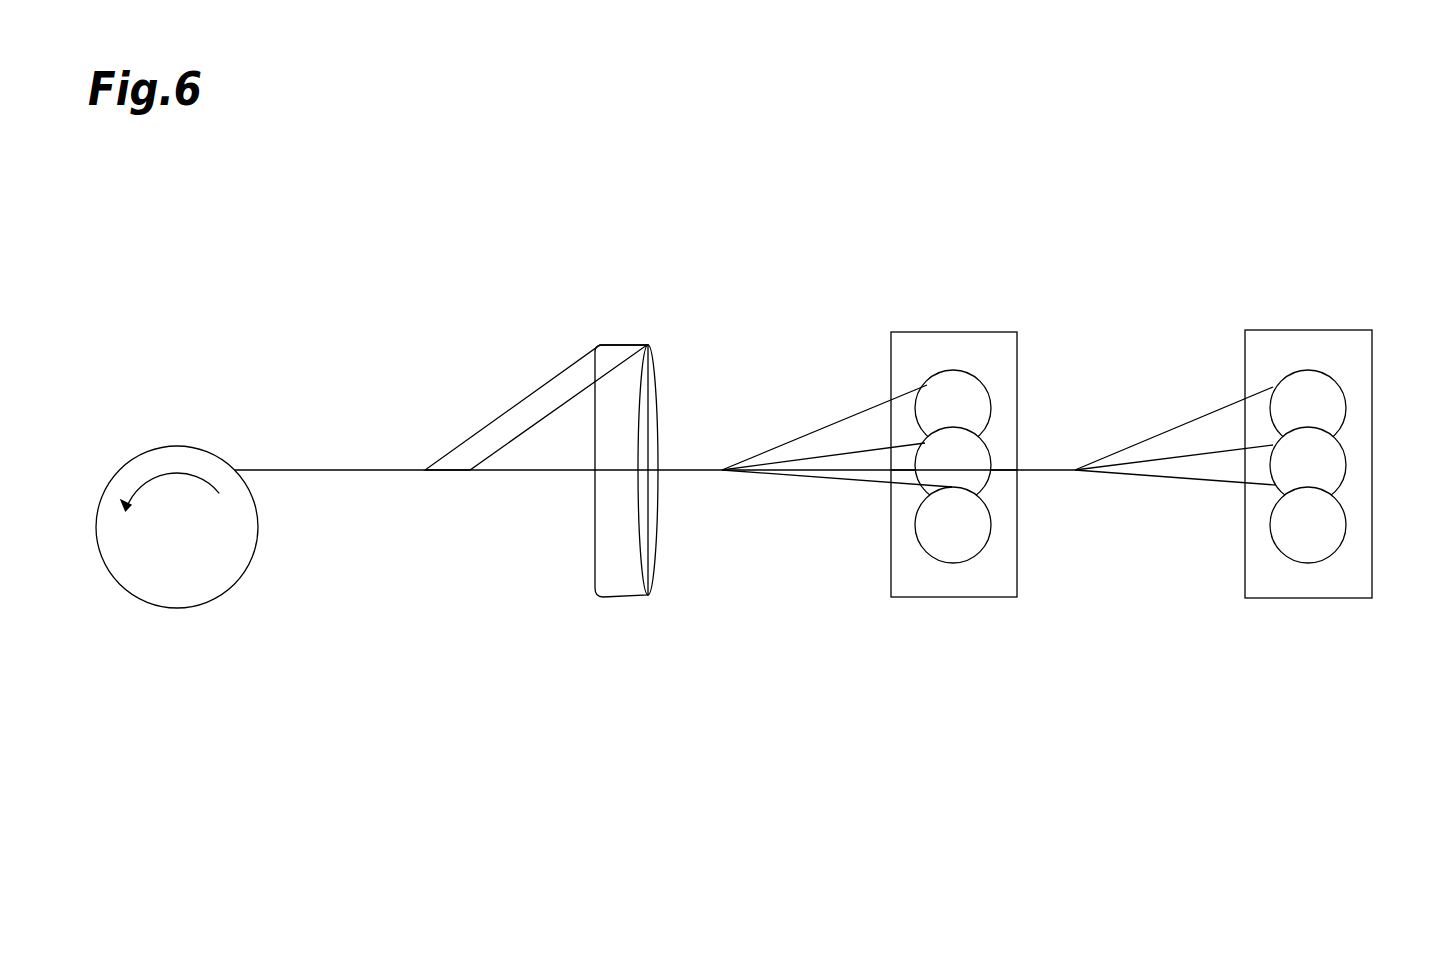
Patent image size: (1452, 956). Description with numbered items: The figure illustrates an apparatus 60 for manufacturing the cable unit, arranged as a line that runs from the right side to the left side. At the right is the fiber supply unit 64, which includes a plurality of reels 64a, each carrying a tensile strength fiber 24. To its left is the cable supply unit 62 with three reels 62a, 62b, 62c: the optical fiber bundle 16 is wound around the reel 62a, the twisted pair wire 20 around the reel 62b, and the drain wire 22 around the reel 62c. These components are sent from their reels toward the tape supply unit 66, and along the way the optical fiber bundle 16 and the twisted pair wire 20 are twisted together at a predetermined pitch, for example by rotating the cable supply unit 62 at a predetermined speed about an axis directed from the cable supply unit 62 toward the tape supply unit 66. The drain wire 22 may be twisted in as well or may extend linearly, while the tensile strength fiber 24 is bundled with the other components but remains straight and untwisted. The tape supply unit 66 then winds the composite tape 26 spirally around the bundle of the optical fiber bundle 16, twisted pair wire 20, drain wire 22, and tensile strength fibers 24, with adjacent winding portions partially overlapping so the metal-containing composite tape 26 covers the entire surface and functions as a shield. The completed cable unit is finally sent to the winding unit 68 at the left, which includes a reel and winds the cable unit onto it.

The apparatus 60 is at (1133, 252).
The winding unit 68 is at (177, 608).
The composite tape 26 is at (538, 402).
The tape supply unit 66 is at (627, 398).
The optical fiber bundle 16 is at (837, 420).
The twisted pair wire 20 is at (797, 460).
The drain wire 22 is at (835, 482).
The cable supply unit 62 is at (991, 430).
The reel 62a is at (993, 413).
The reel 62b is at (990, 447).
The reel 62c is at (990, 523).
The tensile strength fiber 24 is at (1188, 421).
The fiber supply unit 64 is at (1345, 431).
The reel 64a is at (1347, 413).